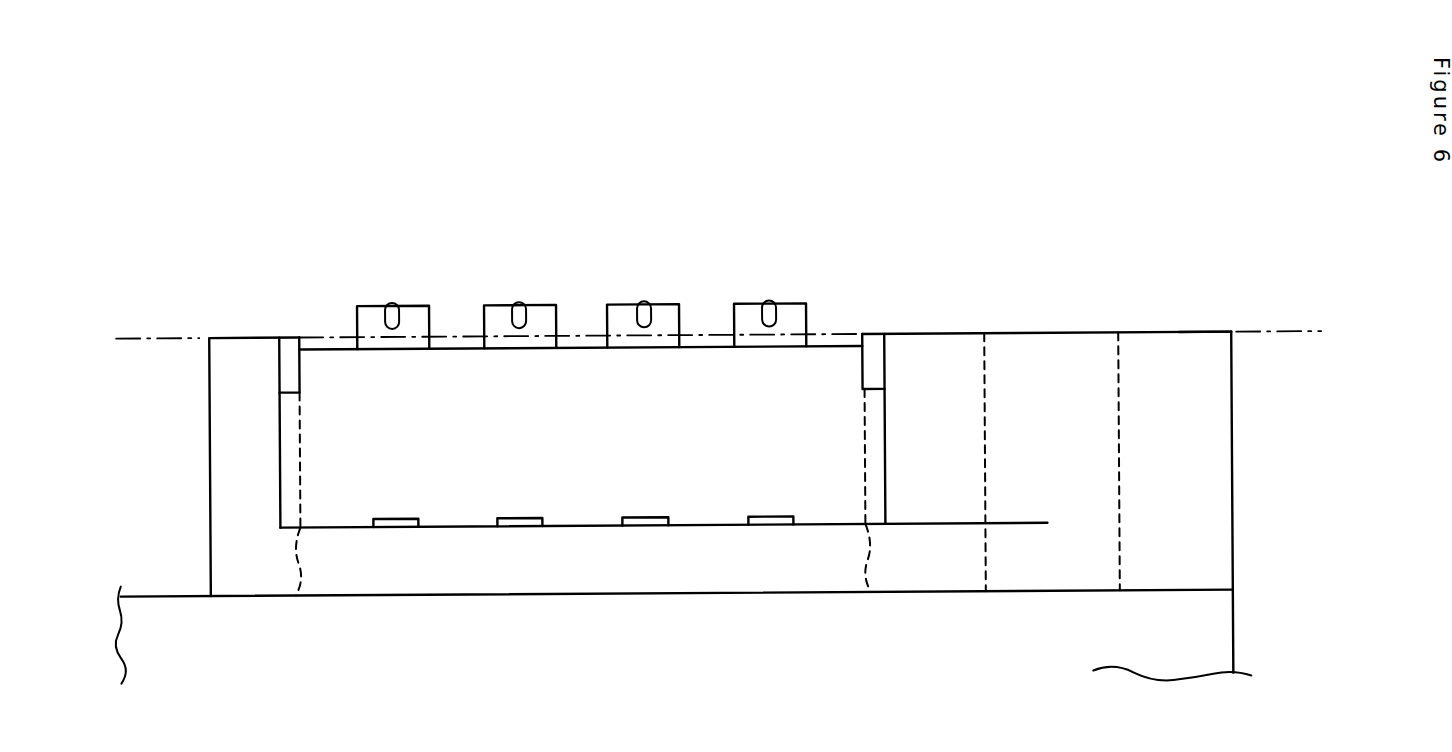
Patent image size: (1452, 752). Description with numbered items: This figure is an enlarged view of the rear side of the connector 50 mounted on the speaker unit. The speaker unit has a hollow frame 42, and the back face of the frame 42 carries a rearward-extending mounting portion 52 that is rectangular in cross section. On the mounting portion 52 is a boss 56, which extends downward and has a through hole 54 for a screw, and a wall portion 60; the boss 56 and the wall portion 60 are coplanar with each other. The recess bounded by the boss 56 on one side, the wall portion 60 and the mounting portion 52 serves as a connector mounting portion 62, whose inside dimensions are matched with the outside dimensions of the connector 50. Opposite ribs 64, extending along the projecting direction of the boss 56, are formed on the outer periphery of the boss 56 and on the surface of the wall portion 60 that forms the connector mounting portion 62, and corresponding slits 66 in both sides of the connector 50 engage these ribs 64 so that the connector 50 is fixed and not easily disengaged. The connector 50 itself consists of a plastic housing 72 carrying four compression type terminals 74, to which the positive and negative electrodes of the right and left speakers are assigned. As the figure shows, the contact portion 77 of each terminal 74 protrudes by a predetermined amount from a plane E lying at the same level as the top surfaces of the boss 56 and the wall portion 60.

The plane E is at (137, 335).
The frame 42 is at (1208, 645).
The connector 50 is at (485, 238).
The mounting portion 52 is at (715, 577).
The through hole 54 is at (1118, 363).
The boss 56 is at (1199, 353).
The wall portion 60 is at (235, 347).
The connector mounting portion 62 is at (597, 514).
The rib 64 is at (295, 356).
The slit 66 is at (295, 593).
The housing 72 is at (458, 347).
The terminal 74 is at (604, 318).
The contact portion 77 is at (662, 304).